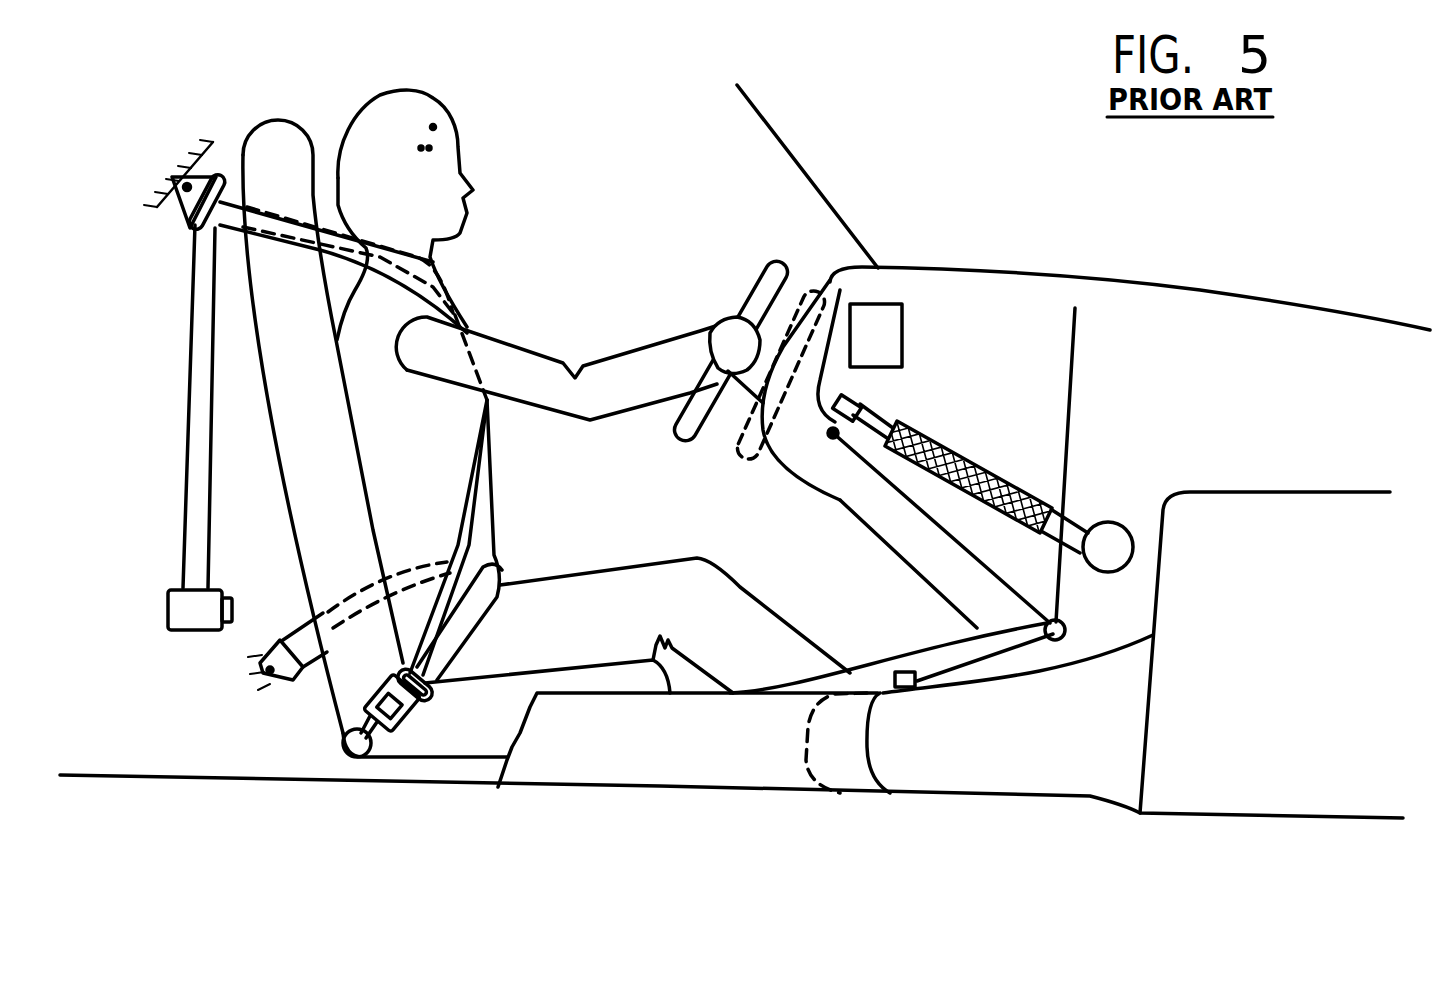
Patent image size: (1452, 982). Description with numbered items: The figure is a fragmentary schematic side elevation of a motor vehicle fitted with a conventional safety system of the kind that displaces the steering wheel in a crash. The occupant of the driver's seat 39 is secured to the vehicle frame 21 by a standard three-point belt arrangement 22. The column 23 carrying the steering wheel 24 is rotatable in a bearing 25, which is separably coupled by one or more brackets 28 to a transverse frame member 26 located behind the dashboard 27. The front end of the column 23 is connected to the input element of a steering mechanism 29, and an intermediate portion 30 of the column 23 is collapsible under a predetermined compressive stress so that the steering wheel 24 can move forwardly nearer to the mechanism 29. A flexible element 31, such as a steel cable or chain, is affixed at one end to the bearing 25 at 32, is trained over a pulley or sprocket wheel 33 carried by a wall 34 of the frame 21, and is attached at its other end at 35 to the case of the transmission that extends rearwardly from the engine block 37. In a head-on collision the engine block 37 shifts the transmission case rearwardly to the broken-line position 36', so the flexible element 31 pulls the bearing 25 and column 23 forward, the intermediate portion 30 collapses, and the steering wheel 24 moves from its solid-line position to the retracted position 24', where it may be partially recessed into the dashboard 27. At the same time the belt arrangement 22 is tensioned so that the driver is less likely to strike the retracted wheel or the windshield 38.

The frame 21 is at (1208, 834).
The three-point belt arrangement 22 is at (470, 527).
The column 23 is at (888, 430).
The steering wheel 24 is at (730, 325).
The front end (retracted) position 24' is at (738, 392).
The bearing 25 is at (793, 440).
The transverse frame member 26 is at (902, 333).
The dashboard 27 is at (832, 292).
The bracket 28 is at (835, 438).
The steering mechanism 29 is at (1108, 533).
The intermediate portion 30 is at (965, 458).
The flexible element 31 is at (1005, 580).
The attachment point on bearing 32 is at (858, 404).
The pulley or sprocket wheel 33 is at (1065, 626).
The wall 34 is at (1072, 403).
The attachment point on transmission case 35 is at (902, 672).
The broken-line position of transmission case 36' is at (790, 743).
The engine block 37 is at (1270, 622).
The windshield 38 is at (755, 107).
The driver's seat 39 is at (315, 533).